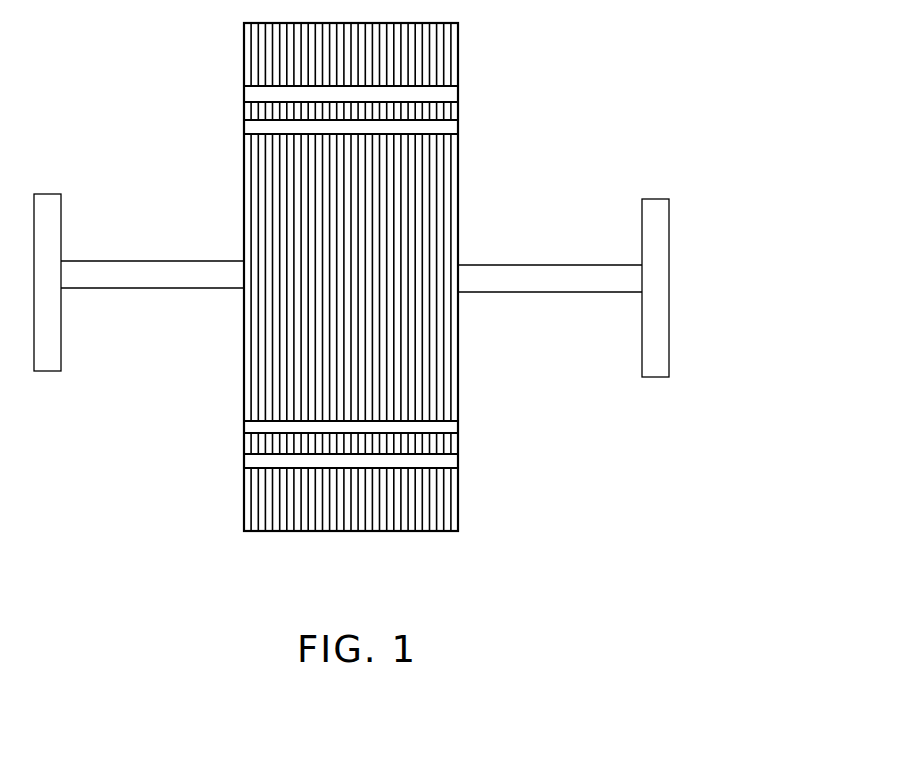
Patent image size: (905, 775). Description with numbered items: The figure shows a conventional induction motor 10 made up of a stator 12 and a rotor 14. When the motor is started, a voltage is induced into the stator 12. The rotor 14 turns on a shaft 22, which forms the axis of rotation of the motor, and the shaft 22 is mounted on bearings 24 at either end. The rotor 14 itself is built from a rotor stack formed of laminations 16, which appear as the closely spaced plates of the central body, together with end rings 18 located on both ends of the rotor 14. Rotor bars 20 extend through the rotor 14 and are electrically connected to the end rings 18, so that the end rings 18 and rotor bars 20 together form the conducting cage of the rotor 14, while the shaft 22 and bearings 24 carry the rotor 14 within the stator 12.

The motor 10 is at (97, 533).
The stator 12 is at (277, 50).
The rotor 14 is at (243, 322).
The laminations 16 is at (430, 391).
The end rings 18 is at (459, 223).
The rotor bars 20 is at (450, 95).
The shaft 22 is at (598, 292).
The bearings 24 is at (669, 336).